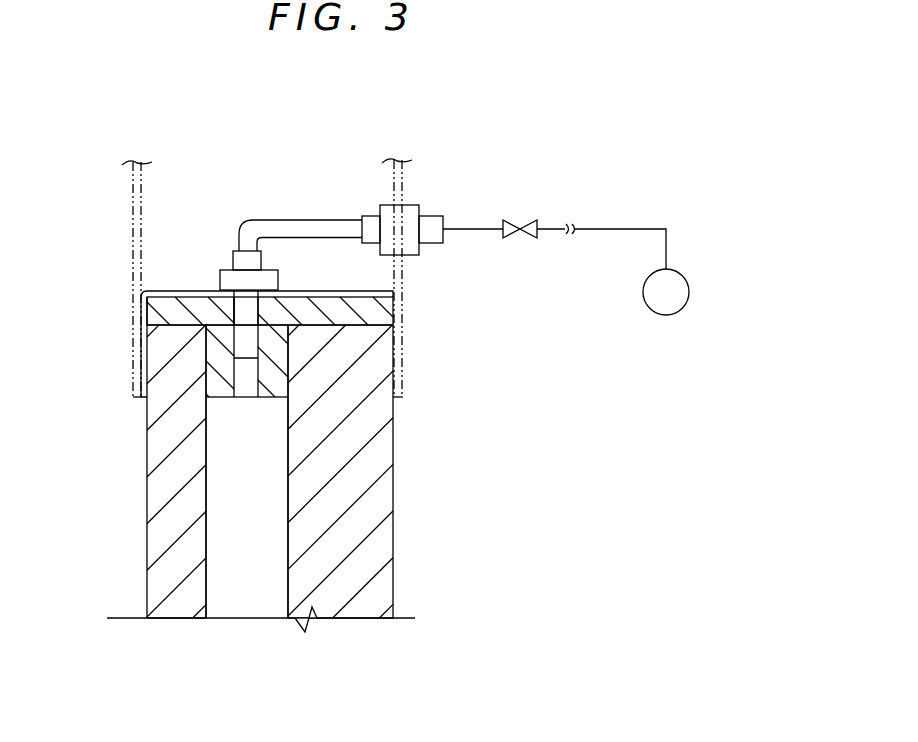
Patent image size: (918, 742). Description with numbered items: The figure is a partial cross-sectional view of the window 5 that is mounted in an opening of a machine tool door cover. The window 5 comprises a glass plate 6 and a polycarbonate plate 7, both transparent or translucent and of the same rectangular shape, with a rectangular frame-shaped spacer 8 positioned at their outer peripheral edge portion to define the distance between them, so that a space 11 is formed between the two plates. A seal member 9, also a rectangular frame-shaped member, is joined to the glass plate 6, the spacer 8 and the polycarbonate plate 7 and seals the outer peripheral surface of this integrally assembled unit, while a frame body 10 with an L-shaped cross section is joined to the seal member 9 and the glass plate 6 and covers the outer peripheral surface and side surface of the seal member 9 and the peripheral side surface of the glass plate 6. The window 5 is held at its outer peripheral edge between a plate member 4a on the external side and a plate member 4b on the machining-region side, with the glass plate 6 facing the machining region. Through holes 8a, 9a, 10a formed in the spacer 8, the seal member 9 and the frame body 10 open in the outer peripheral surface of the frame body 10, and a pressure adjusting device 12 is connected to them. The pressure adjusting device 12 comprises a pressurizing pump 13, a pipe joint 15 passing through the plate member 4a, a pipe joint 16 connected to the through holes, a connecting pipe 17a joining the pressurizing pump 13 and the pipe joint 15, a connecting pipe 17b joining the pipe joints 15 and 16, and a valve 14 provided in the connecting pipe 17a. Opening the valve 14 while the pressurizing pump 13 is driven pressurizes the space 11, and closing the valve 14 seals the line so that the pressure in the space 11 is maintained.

The plate member 4a is at (402, 183).
The plate member 4b is at (135, 203).
The window 5 is at (475, 448).
The glass plate 6 is at (148, 507).
The polycarbonate plate 7 is at (386, 487).
The spacer 8 is at (212, 357).
The through hole 8a is at (238, 377).
The seal member 9 is at (185, 305).
The through hole 9a is at (252, 305).
The frame body 10 is at (143, 318).
The through hole 10a is at (240, 317).
The space 11 is at (230, 520).
The pressure adjusting device 12 is at (598, 140).
The pressurizing pump 13 is at (662, 315).
The valve 14 is at (512, 220).
The pipe joint 15 is at (443, 222).
The pipe joint 16 is at (235, 315).
The connecting pipe 17a is at (620, 229).
The connecting pipe 17b is at (302, 221).